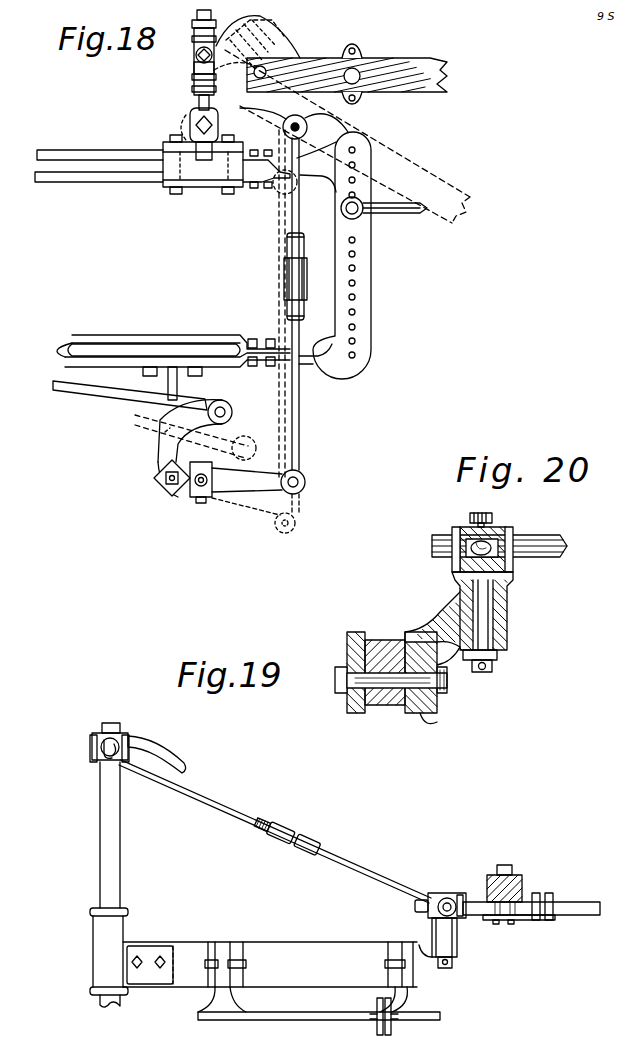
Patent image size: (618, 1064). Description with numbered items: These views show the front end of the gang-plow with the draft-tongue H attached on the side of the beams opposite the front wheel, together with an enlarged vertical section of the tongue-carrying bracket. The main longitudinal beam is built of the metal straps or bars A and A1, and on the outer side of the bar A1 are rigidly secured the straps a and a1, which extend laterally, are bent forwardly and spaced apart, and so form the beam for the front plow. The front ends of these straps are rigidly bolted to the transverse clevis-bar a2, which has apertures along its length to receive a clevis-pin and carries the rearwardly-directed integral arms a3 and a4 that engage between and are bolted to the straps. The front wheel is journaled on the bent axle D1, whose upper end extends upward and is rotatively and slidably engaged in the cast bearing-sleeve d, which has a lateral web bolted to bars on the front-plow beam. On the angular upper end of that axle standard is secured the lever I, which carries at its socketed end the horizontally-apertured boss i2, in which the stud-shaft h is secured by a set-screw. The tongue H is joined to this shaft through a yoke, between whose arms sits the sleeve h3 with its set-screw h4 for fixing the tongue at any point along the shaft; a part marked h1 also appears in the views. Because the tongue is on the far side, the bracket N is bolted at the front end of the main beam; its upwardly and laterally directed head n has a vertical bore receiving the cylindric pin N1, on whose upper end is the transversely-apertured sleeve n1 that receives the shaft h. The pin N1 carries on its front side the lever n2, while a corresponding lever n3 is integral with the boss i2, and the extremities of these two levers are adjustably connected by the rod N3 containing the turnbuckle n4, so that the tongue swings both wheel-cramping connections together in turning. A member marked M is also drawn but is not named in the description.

In FIG. 18, the stud-shaft h is at (198, 101).
In FIG. 20, the stud-shaft h is at (538, 540).
In FIG. 19, the stud-shaft h is at (576, 902).
In FIG. 19, the nuts on rod h h1 is at (539, 894).
In FIG. 18, the sleeve h3 is at (194, 66).
In FIG. 18, the set-screw h4 is at (198, 47).
In FIG. 18, the draft-tongue H is at (377, 66).
In FIG. 19, the draft-tongue H is at (515, 875).
In FIG. 18, the head n is at (190, 127).
In FIG. 20, the head n is at (500, 598).
In FIG. 19, the head n is at (457, 936).
In FIG. 18, the transversely-apertured sleeve n1 is at (220, 42).
In FIG. 20, the transversely-apertured sleeve n1 is at (503, 532).
In FIG. 18, the lever n2 is at (348, 114).
In FIG. 20, the lever n2 is at (478, 545).
In FIG. 19, the lever n2 is at (449, 904).
In FIG. 18, the lever n3 is at (250, 488).
In FIG. 19, the lever n3 is at (100, 765).
In FIG. 18, the turnbuckle n4 is at (287, 278).
In FIG. 19, the turnbuckle n4 is at (310, 838).
In FIG. 18, the bracket N is at (172, 150).
In FIG. 20, the bracket N is at (446, 632).
In FIG. 19, the bracket N is at (428, 952).
In FIG. 20, the cylindric pin or shaft N1 is at (486, 628).
In FIG. 19, the cylindric pin or shaft N1 is at (444, 968).
In FIG. 18, the rod N3 is at (300, 420).
In FIG. 19, the rod N3 is at (233, 806).
In FIG. 18, the strap or bar A is at (56, 200).
In FIG. 20, the strap or bar A is at (432, 722).
In FIG. 20, the strap or bar A1 is at (350, 646).
In FIG. 18, the strap a is at (197, 347).
In FIG. 18, the strap a1 is at (48, 352).
In FIG. 18, the transverse clevis-bar a2 is at (372, 316).
In FIG. 19, the transverse clevis-bar a2 is at (290, 1020).
In FIG. 18, the arm a3 is at (306, 178).
In FIG. 18, the arm a4 is at (313, 362).
In FIG. 18, the bar M is at (62, 392).
In FIG. 18, the lever I is at (165, 440).
In FIG. 19, the lever I is at (130, 738).
In FIG. 18, the boss i2 is at (195, 497).
In FIG. 19, the bent axle D1 is at (114, 866).
In FIG. 19, the bearing-sleeve d is at (110, 956).